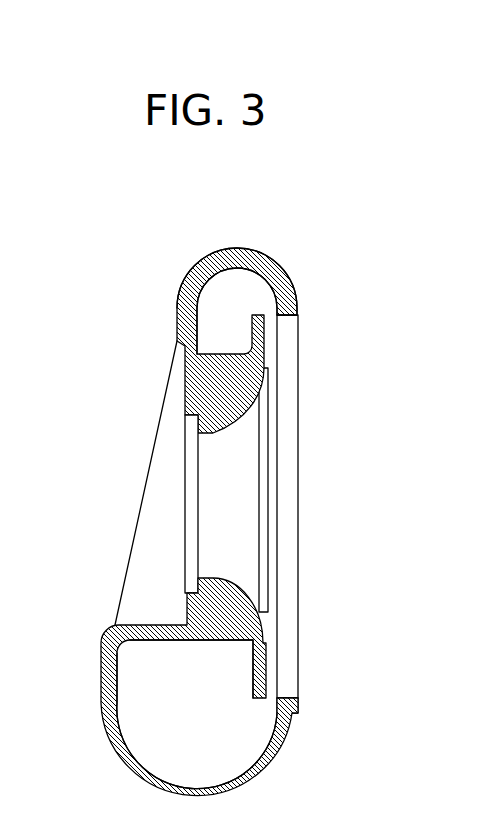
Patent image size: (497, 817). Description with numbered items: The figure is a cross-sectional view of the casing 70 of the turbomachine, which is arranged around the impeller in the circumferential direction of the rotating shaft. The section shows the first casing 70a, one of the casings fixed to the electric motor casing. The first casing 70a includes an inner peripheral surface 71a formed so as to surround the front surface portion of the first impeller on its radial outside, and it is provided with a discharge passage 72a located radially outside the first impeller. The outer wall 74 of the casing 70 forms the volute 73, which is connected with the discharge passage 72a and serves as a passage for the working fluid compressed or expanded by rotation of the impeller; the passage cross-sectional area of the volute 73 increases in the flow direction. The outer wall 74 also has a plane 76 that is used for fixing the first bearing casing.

The casing 70 is at (135, 357).
The first casing 70a is at (146, 483).
The inner peripheral surface 71a is at (230, 423).
The discharge passage 72a is at (275, 347).
The volute 73 is at (165, 698).
The outer wall 74 is at (105, 713).
The plane 76 is at (183, 382).